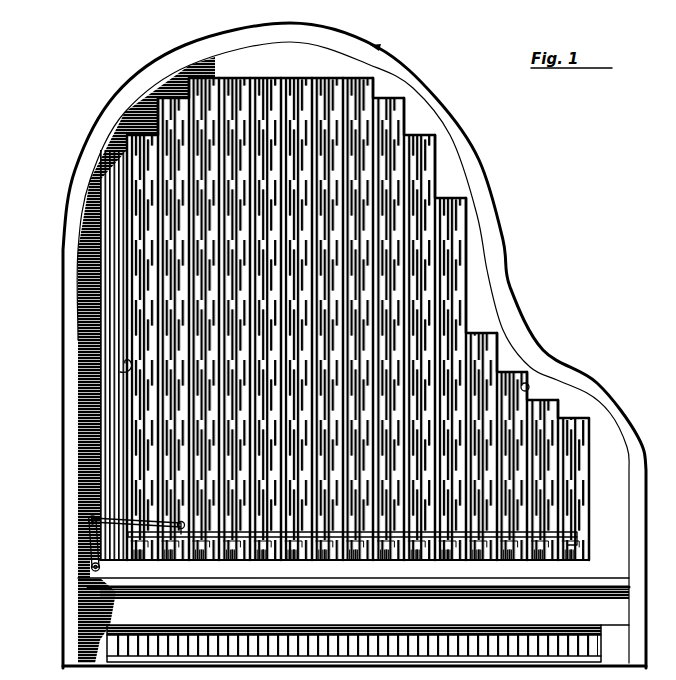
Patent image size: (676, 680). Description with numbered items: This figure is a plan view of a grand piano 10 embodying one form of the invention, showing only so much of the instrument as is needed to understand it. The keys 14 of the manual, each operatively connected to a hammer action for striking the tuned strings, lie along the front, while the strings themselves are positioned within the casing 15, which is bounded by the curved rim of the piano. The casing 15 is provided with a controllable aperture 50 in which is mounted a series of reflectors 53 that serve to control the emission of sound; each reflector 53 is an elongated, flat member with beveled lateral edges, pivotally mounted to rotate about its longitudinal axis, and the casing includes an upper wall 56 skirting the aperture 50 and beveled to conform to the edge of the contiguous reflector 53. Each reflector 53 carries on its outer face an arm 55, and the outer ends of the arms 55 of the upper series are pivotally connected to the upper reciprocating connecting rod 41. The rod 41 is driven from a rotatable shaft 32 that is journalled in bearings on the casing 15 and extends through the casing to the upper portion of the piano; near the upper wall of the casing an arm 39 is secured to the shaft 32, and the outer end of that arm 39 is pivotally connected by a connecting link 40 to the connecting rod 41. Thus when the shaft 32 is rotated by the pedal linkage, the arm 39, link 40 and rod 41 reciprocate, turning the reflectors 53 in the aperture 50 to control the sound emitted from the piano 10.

The grand piano 10 is at (510, 303).
The keys 14 is at (506, 643).
The casing 15 is at (363, 581).
The rotatable shaft 32 is at (90, 570).
The arm 39 is at (90, 544).
The connecting link 40 is at (82, 512).
The reciprocating connecting rod 41 is at (577, 535).
The controllable aperture 50 is at (120, 372).
The reflectors 53 is at (583, 453).
The arm 55 is at (580, 545).
The upper wall 56 is at (357, 68).